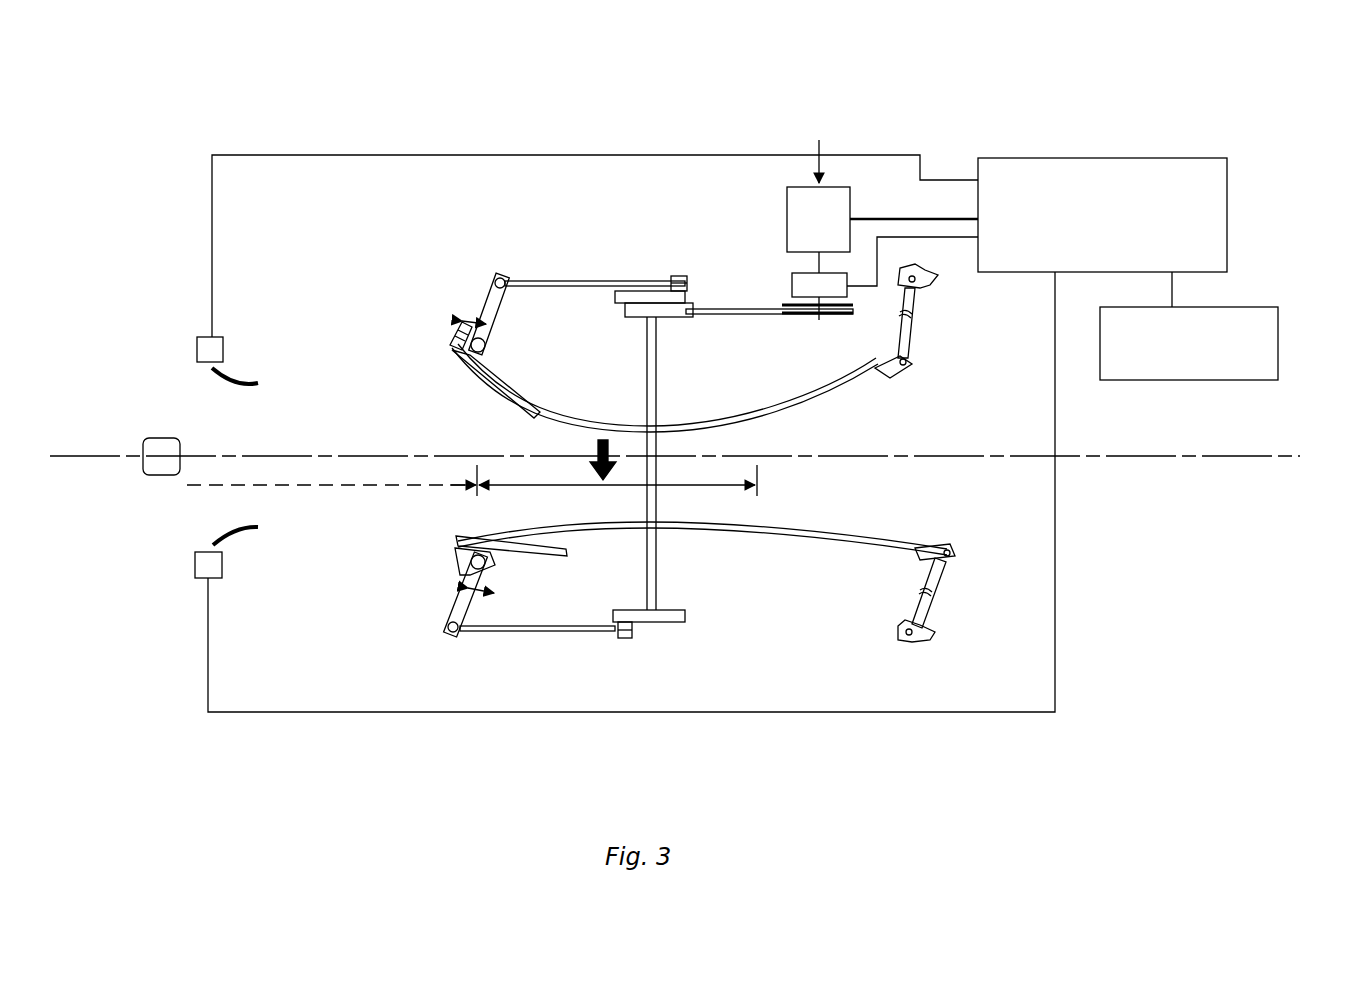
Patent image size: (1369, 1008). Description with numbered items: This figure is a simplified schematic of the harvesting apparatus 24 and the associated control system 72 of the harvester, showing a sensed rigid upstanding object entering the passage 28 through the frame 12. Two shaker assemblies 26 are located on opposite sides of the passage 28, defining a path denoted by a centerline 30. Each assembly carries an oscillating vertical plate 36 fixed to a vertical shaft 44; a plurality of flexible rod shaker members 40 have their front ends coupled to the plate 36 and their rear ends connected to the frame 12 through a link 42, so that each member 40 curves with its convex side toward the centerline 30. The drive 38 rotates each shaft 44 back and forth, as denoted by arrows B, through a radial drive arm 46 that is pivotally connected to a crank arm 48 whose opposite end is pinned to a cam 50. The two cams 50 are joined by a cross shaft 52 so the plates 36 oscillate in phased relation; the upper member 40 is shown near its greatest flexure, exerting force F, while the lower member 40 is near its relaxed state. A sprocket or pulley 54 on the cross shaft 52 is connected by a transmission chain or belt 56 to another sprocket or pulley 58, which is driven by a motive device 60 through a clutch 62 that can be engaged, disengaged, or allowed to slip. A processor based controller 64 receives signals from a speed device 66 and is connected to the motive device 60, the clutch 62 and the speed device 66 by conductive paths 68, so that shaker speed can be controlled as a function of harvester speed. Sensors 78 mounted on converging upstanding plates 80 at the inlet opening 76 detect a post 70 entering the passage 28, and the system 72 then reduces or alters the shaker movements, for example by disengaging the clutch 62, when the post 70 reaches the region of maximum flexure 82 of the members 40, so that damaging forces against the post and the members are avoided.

The frame 12 is at (937, 279).
The harvesting apparatus 24 is at (476, 282).
The shaker assemblies 26 is at (915, 352).
The passage 28 is at (960, 487).
The centerline 30 is at (1180, 455).
The oscillating vertical plate 36 is at (460, 323).
The drive 38 is at (820, 144).
The shaker members 40 is at (705, 397).
The link 42 is at (915, 318).
The vertical shaft 44 is at (490, 345).
The radial drive arm 46 is at (488, 283).
The crank arm 48 is at (598, 281).
The cam 50 is at (688, 297).
The cross shaft 52 is at (657, 558).
The sprocket or pulley 54 is at (636, 317).
The transmission chain or belt 56 is at (770, 315).
The sprocket or pulley 58 is at (818, 335).
The motive device 60 is at (850, 196).
The clutch 62 is at (792, 285).
The processor based controller 64 is at (1078, 158).
The speed device 66 is at (1280, 360).
The conductive paths 68 is at (938, 237).
The post 70 is at (160, 476).
The system 72 is at (564, 133).
The inlet opening 76 is at (258, 447).
The sensor 78 is at (197, 348).
The upstanding sheets or plates 80 is at (255, 380).
The region of maximum flexure 82 is at (750, 485).
The arrows B is at (487, 322).
The force F is at (620, 432).